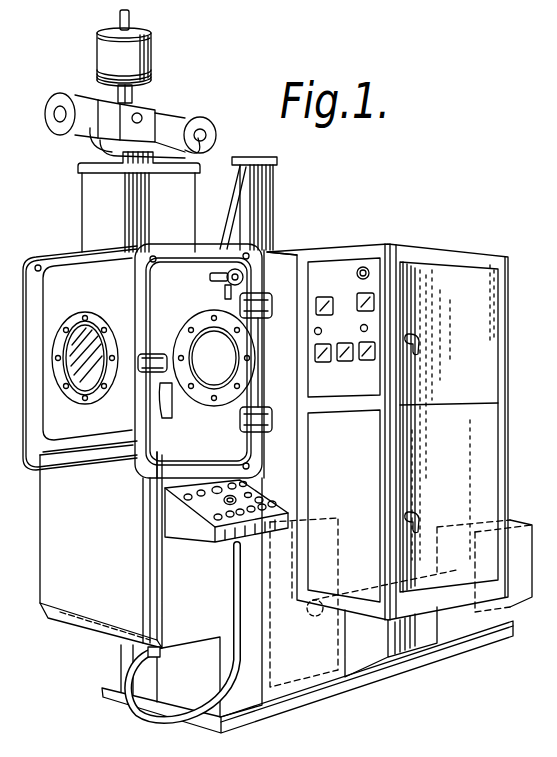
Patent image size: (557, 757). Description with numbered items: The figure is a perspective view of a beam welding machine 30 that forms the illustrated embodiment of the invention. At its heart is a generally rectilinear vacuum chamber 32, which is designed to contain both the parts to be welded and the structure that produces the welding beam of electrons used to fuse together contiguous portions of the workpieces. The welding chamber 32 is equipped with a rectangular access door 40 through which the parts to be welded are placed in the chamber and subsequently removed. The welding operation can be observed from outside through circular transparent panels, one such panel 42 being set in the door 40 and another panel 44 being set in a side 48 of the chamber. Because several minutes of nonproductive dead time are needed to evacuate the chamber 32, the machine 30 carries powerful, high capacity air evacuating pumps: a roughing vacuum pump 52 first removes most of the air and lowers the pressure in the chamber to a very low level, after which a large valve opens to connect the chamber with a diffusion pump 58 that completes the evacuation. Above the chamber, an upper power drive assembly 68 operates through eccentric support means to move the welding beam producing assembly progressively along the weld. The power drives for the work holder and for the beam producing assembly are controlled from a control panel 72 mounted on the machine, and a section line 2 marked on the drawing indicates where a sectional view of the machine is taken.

The section line 2- 2 is at (142, 227).
The beam welding machine 30 is at (332, 207).
The vacuum chamber 32 is at (64, 228).
The access door 40 is at (238, 440).
The circular transparent panel 42 is at (211, 386).
The circular transparent panel 44 is at (80, 335).
The side of the chamber 48 is at (52, 480).
The roughing vacuum pump 52 is at (518, 522).
The diffusion pump 58 is at (326, 520).
The upper power drive assembly 68 is at (204, 74).
The control panel 72 is at (205, 507).